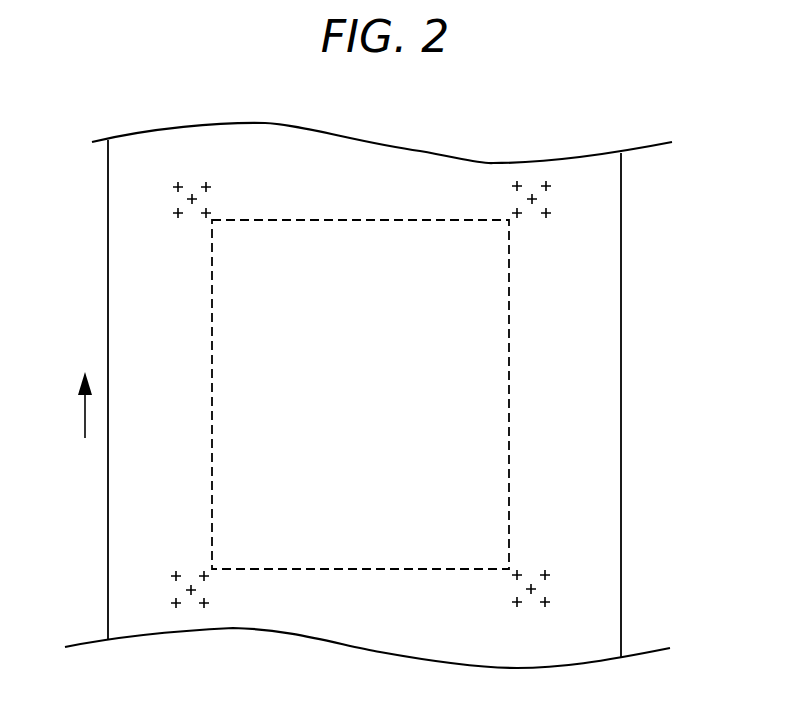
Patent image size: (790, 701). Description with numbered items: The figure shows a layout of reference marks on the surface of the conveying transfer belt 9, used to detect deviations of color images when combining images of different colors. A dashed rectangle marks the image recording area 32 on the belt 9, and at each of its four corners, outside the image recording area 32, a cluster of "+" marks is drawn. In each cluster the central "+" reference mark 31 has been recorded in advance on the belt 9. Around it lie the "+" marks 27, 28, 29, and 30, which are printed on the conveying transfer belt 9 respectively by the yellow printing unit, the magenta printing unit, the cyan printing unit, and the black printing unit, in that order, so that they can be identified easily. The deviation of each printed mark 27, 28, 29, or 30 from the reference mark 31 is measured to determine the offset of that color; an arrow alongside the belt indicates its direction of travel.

The conveying transfer belt 9 is at (603, 337).
The "+" mark 27 is at (176, 184).
The "+" mark 28 is at (206, 184).
The "+" mark 29 is at (176, 215).
The "+" mark 30 is at (204, 218).
The reference mark 31 is at (191, 197).
The image recording area 32 is at (378, 238).